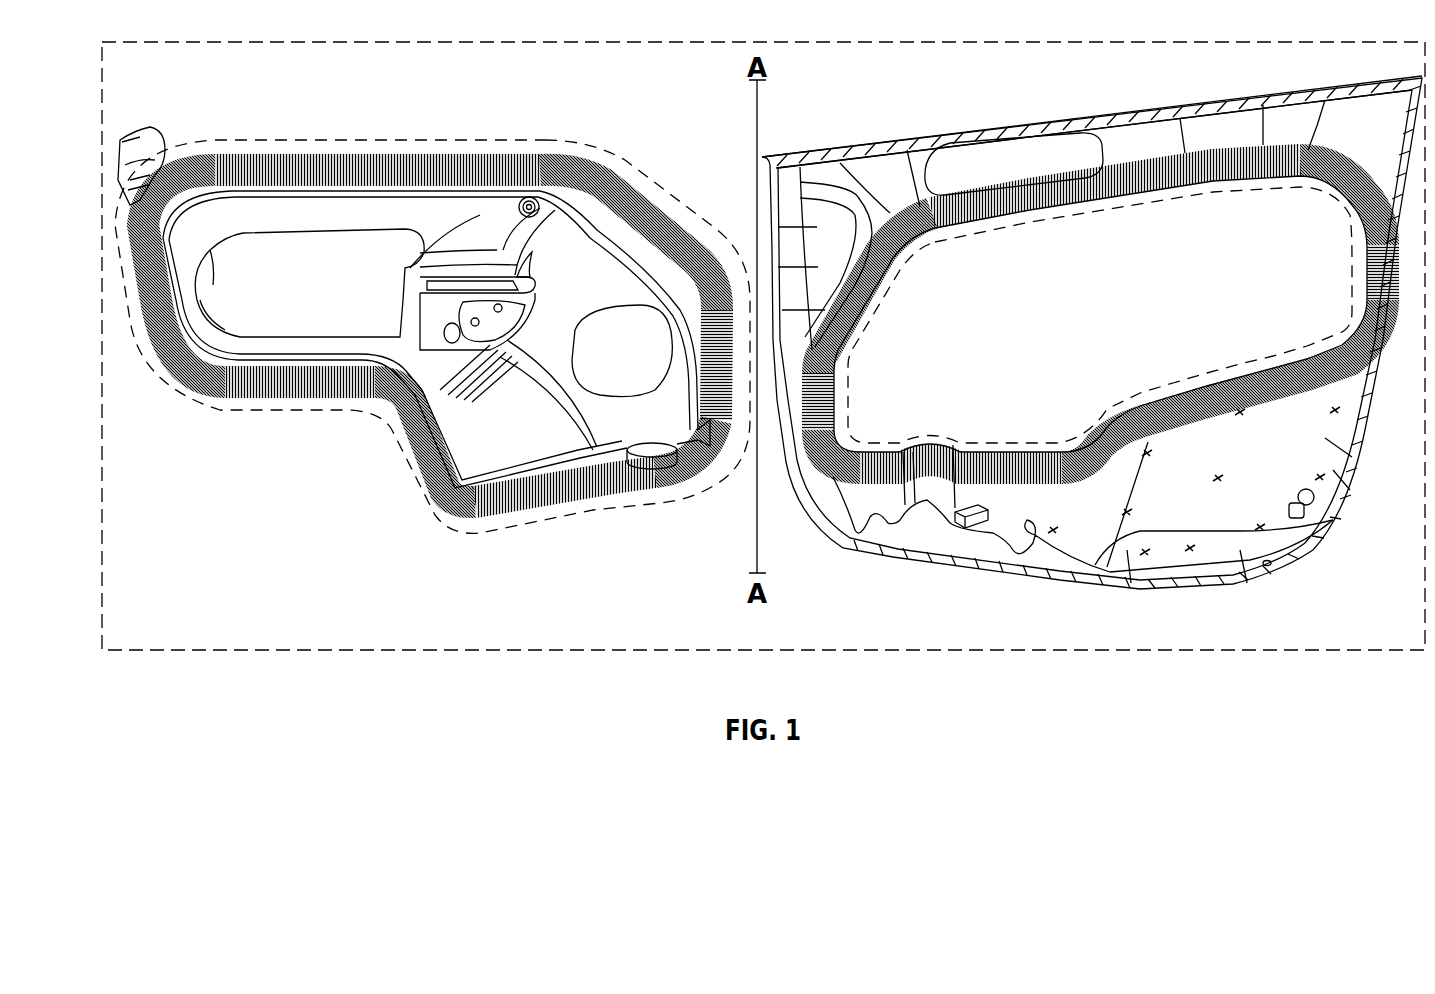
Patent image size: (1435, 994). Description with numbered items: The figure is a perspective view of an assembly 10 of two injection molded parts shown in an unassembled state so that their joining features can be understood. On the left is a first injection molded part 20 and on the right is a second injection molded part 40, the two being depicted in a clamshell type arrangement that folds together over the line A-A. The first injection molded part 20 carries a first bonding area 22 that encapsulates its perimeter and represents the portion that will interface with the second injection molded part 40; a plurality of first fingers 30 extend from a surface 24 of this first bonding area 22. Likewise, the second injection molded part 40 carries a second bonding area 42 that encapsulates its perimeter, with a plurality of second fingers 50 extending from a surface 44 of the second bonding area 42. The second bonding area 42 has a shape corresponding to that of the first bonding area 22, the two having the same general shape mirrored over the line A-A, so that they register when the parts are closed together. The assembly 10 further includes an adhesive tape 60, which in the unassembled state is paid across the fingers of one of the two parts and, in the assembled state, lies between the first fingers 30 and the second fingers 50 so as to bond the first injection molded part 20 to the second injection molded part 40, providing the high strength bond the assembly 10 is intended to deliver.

The assembly 10 is at (176, 665).
The first injection molded part 20 is at (432, 351).
The first bonding area 22 is at (566, 152).
The surface 24 is at (620, 272).
The first fingers 30 is at (446, 153).
The second injection molded part 40 is at (1267, 585).
The second bonding area 42 is at (1122, 214).
The surface 44 is at (1215, 150).
The second fingers 50 is at (972, 225).
The adhesive tape 60 is at (1035, 215).